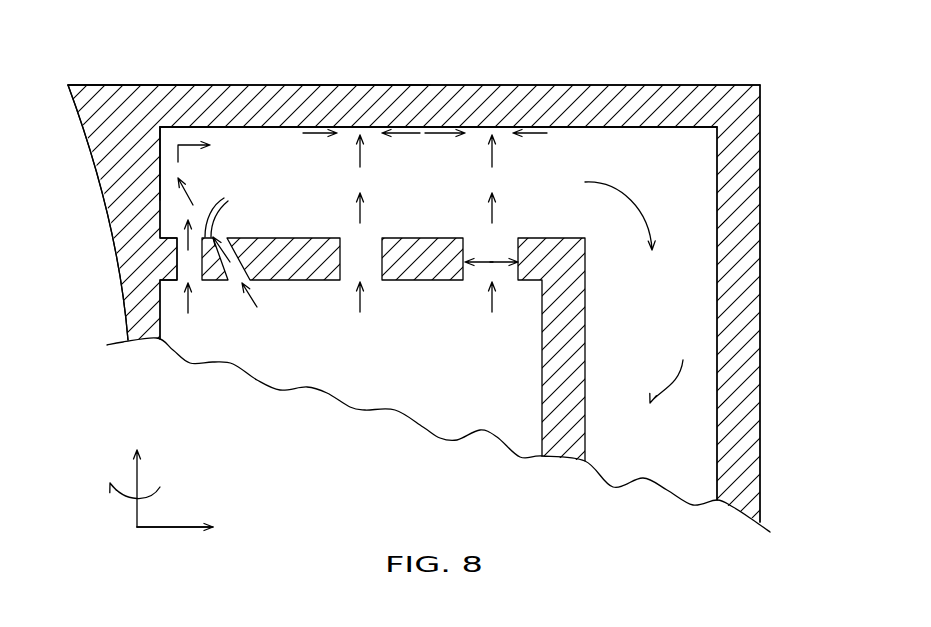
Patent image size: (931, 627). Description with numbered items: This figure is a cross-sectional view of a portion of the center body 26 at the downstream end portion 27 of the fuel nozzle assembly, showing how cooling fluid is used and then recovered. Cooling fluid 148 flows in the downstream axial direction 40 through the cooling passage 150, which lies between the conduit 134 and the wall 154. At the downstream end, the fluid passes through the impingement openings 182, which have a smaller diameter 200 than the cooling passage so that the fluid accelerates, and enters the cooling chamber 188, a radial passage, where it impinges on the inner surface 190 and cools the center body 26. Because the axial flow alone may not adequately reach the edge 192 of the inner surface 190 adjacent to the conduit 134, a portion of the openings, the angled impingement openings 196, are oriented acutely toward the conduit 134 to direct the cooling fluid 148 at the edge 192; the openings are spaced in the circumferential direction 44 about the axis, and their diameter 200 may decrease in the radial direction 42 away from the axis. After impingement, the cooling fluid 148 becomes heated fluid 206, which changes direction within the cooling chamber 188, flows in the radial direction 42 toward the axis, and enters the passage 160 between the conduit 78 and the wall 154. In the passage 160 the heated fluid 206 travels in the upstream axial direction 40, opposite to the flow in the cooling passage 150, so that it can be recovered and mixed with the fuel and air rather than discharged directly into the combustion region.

The center body 26 is at (129, 53).
The downstream end portion 27 is at (372, 58).
The axial direction 40 is at (135, 515).
The radial direction 42 is at (177, 527).
The circumferential direction 44 is at (118, 500).
The conduit 78 is at (762, 290).
The conduit 134 is at (122, 278).
The cooling fluid 148 is at (192, 203).
The cooling passage 150 is at (428, 383).
The wall 154 is at (542, 362).
The passage 160 is at (668, 315).
The impingement openings 182 is at (463, 247).
The cooling chamber 188 is at (572, 158).
The inner surface 190 is at (252, 135).
The edge 192 is at (158, 139).
The angled impingement openings 196 is at (225, 237).
The diameter 200 is at (500, 257).
The heated fluid 206 is at (201, 150).